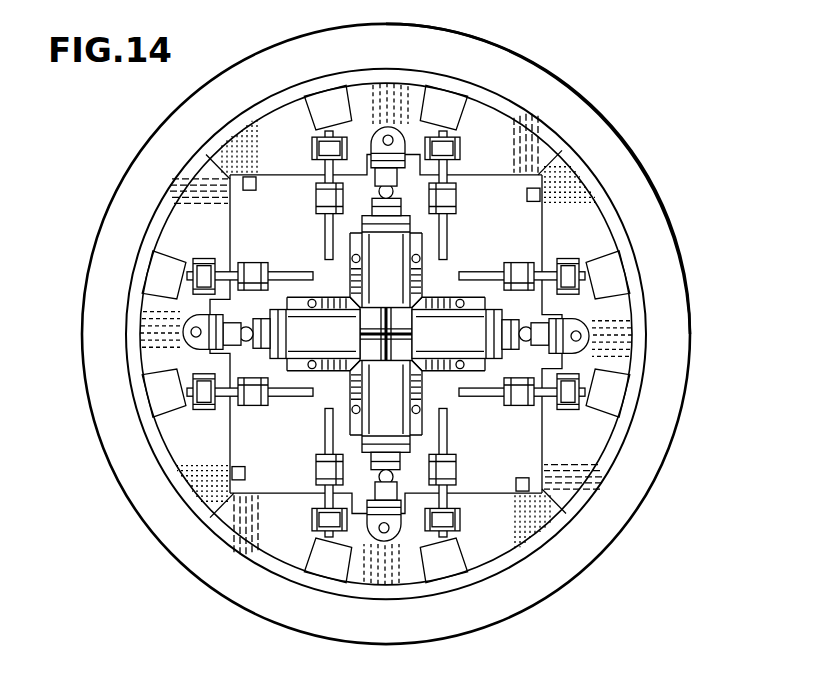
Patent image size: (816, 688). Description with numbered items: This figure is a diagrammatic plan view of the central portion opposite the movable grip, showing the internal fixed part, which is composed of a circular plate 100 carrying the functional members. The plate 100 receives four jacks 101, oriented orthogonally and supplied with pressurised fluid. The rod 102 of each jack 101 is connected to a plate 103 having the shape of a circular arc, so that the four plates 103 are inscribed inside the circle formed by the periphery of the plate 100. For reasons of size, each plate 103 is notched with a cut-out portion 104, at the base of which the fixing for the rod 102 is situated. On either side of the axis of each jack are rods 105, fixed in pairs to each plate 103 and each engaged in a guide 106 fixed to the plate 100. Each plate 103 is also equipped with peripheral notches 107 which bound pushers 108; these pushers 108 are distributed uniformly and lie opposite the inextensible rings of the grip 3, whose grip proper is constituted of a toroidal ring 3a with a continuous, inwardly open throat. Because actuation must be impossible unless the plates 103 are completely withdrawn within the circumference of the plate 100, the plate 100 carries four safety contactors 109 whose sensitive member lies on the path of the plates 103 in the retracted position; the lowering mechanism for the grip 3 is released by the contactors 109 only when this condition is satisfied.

The grip 3 is at (137, 483).
The toroidal ring 3a is at (624, 507).
The circular plate 100 is at (531, 220).
The jack 101 is at (427, 276).
The rod 102 is at (369, 160).
The plate 103 is at (413, 92).
The cut-out portion 104 is at (452, 118).
The rod 105 is at (303, 273).
The guide 106 is at (326, 205).
The peripheral notch 107 is at (312, 82).
The pusher 108 is at (241, 122).
The safety contactor 109 is at (610, 162).